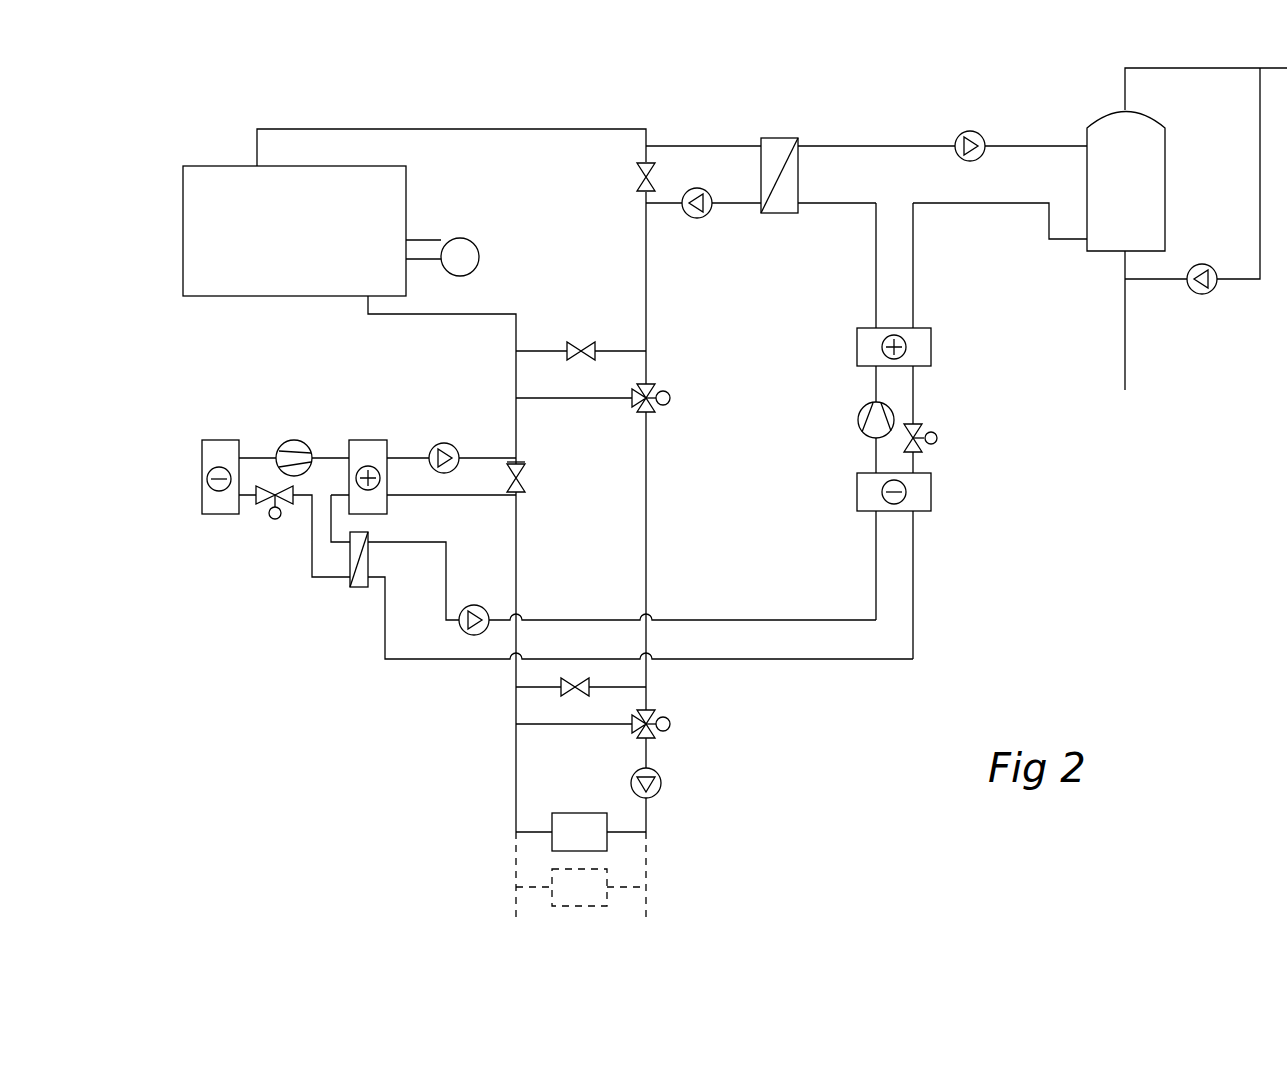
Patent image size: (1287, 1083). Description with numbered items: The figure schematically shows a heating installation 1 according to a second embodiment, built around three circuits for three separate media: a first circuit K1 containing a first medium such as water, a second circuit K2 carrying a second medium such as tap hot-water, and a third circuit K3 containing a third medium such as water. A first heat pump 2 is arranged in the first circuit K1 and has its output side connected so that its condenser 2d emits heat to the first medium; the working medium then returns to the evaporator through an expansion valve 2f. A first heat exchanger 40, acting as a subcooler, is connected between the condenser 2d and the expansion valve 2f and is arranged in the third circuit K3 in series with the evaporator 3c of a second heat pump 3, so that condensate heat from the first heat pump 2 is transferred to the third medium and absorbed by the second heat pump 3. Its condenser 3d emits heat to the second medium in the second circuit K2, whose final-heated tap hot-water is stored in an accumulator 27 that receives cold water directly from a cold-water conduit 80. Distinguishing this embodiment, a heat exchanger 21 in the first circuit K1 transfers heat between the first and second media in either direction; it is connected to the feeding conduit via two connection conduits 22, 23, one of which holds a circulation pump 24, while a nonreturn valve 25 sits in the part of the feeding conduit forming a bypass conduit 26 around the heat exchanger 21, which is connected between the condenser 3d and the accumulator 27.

The heating installation 1 is at (737, 702).
The first heat pump 2 is at (305, 420).
The condenser 2d is at (372, 445).
The expansion valve 2f is at (260, 512).
The second heat pump 3 is at (952, 392).
The evaporator 3c is at (925, 497).
The condenser 3d is at (925, 348).
The heat exchanger 21 is at (790, 184).
The connection conduit 22 is at (705, 142).
The connection conduit 23 is at (737, 210).
The circulation pump 24 is at (703, 218).
The nonreturn valve 25 is at (640, 172).
The bypass conduit 26 is at (640, 200).
The accumulator 27 is at (1155, 210).
The first heat exchanger 40 is at (358, 592).
The cold-water conduit 80 is at (1128, 372).
The first circuit K1 is at (515, 115).
The second circuit K2 is at (1025, 133).
The third circuit K3 is at (745, 608).